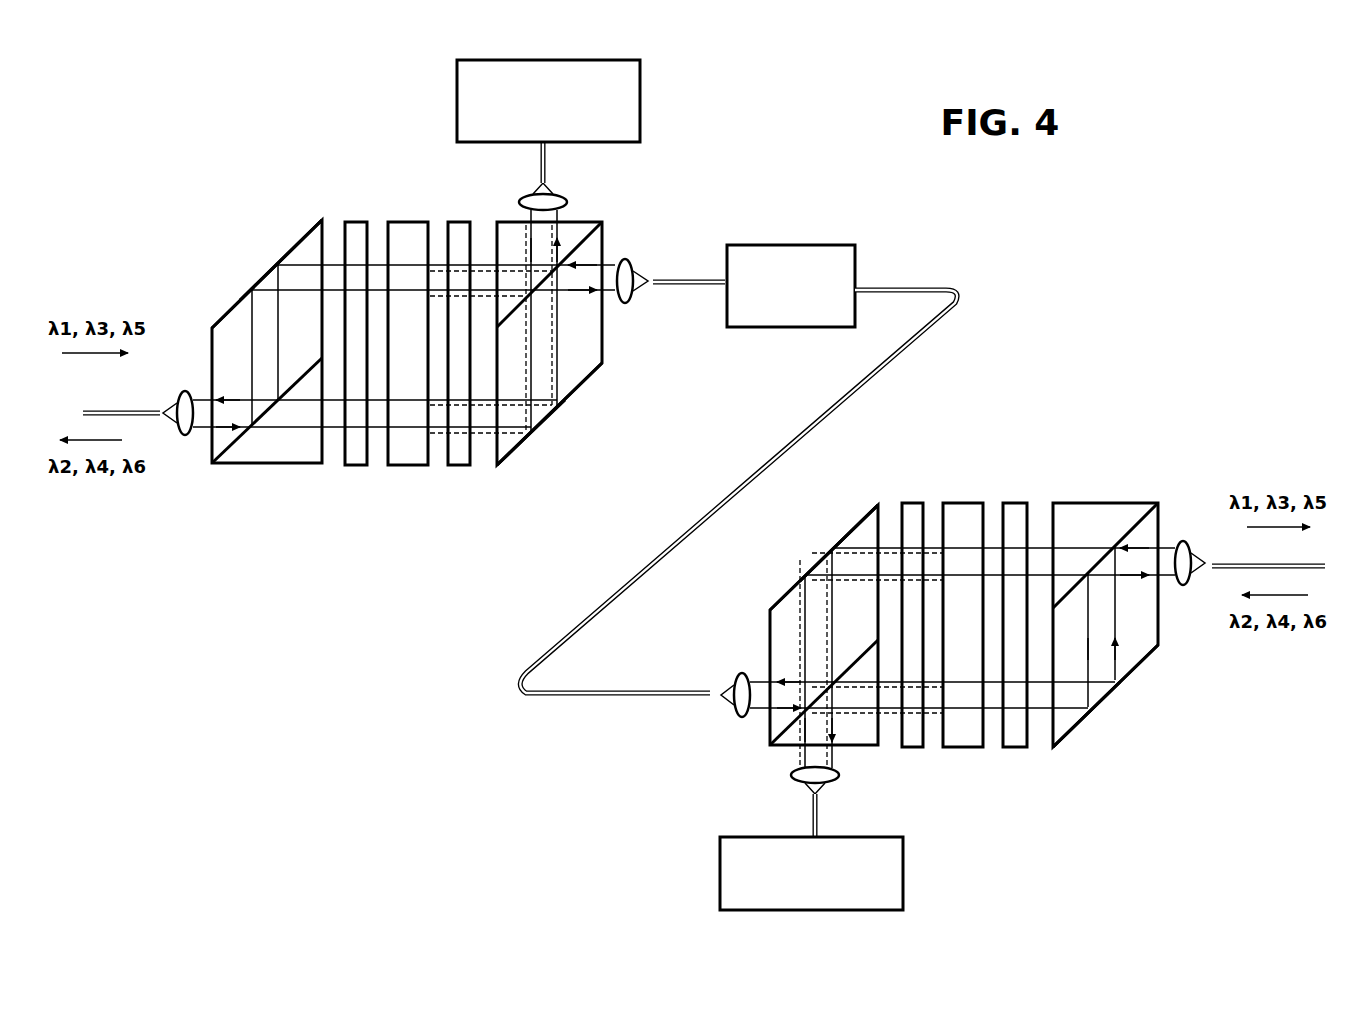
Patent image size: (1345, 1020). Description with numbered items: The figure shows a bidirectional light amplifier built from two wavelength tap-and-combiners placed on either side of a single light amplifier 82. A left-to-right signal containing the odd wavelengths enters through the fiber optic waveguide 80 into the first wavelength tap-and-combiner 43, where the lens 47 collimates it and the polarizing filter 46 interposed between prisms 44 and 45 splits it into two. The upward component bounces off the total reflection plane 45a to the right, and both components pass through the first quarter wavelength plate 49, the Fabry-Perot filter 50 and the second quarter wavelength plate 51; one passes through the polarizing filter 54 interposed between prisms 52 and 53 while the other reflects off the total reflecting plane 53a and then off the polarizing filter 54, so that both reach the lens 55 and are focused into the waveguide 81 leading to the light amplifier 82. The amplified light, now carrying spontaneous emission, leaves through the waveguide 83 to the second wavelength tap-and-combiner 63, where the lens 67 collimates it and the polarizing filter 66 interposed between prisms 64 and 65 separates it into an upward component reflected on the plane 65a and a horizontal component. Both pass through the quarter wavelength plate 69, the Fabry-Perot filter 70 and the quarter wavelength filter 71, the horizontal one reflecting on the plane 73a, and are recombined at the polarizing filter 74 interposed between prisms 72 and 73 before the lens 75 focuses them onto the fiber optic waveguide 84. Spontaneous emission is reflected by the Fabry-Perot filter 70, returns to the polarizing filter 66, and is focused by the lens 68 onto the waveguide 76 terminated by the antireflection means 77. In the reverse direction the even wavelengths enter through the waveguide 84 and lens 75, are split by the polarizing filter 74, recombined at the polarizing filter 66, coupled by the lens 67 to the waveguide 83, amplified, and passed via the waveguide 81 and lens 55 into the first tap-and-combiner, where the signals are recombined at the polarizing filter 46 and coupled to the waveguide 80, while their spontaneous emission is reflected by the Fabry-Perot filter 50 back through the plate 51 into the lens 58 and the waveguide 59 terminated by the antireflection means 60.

The first wavelength tap-and-combiner 43 is at (185, 262).
The prism 44 is at (249, 353).
The prism 45 is at (234, 308).
The total reflection plane 45a is at (297, 244).
The polarizing filter 46 is at (212, 462).
The lens 47 is at (185, 390).
The first quarter wavelength plate 49 is at (360, 222).
The Fabry-Perot filter 50 is at (408, 222).
The second quarter wavelength plate 51 is at (458, 222).
The prism 52 is at (581, 342).
The prism 53 is at (586, 375).
The total reflecting plane 53a is at (516, 445).
The polarizing filter 54 is at (604, 226).
The lens 55 is at (626, 304).
The lens 58 is at (560, 202).
The waveguide 59 is at (541, 166).
The antireflection means 60 is at (641, 120).
The second wavelength tap-and-combiner 63 is at (800, 555).
The prism 64 is at (804, 635).
The prism 65 is at (778, 615).
The plane 65a is at (851, 532).
The polarizing filter 66 is at (770, 740).
The lens 67 is at (745, 672).
The lens 68 is at (795, 777).
The quarter wavelength plate 69 is at (915, 503).
The Fabry-Perot filter 70 is at (965, 503).
The quarter wavelength filter 71 is at (1016, 503).
The prism 72 is at (1135, 622).
The prism 73 is at (1137, 655).
The plane 73a is at (1070, 736).
The polarizing filter 74 is at (1160, 510).
The lens 75 is at (1183, 588).
The waveguide 76 is at (820, 826).
The antireflection means 77 is at (893, 837).
The fiber optic waveguide 80 is at (118, 413).
The waveguide 81 is at (680, 282).
The light amplifier 82 is at (805, 245).
The waveguide 83 is at (615, 691).
The fiber optic waveguide 84 is at (1258, 566).